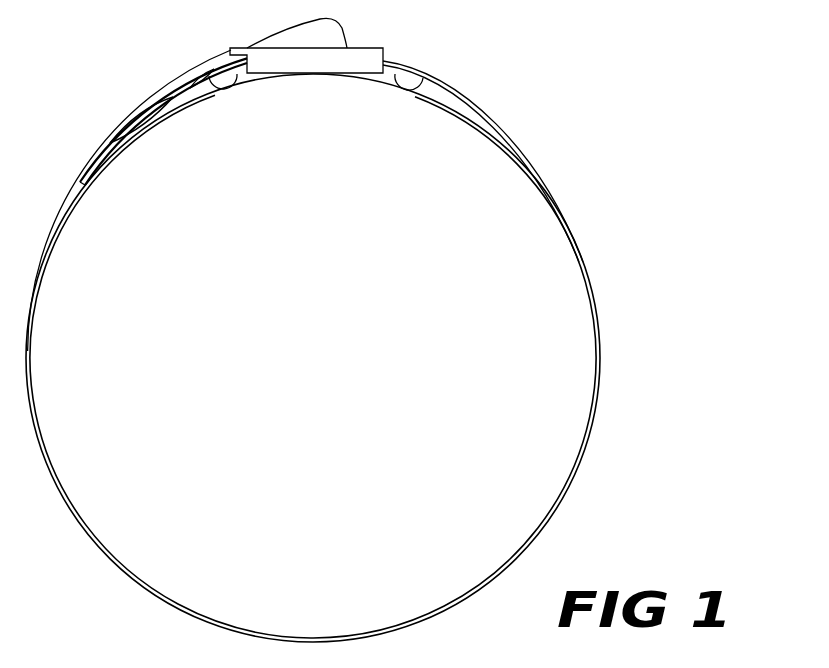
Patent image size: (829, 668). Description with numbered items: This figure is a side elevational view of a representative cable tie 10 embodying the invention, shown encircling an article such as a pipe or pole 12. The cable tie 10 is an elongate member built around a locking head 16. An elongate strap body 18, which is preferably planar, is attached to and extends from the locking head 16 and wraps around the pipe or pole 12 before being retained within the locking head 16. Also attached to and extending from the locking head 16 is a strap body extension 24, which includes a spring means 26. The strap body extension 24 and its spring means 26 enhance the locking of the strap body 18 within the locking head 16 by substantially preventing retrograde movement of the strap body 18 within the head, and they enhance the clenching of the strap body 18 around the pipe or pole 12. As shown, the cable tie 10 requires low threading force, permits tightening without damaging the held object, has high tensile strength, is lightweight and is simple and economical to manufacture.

The cable tie 10 is at (375, 51).
The pipe or pole 12 is at (312, 365).
The locking head 16 is at (363, 58).
The strap body 18 is at (70, 182).
The strap body extension 24 is at (200, 80).
The spring means 26 is at (155, 100).